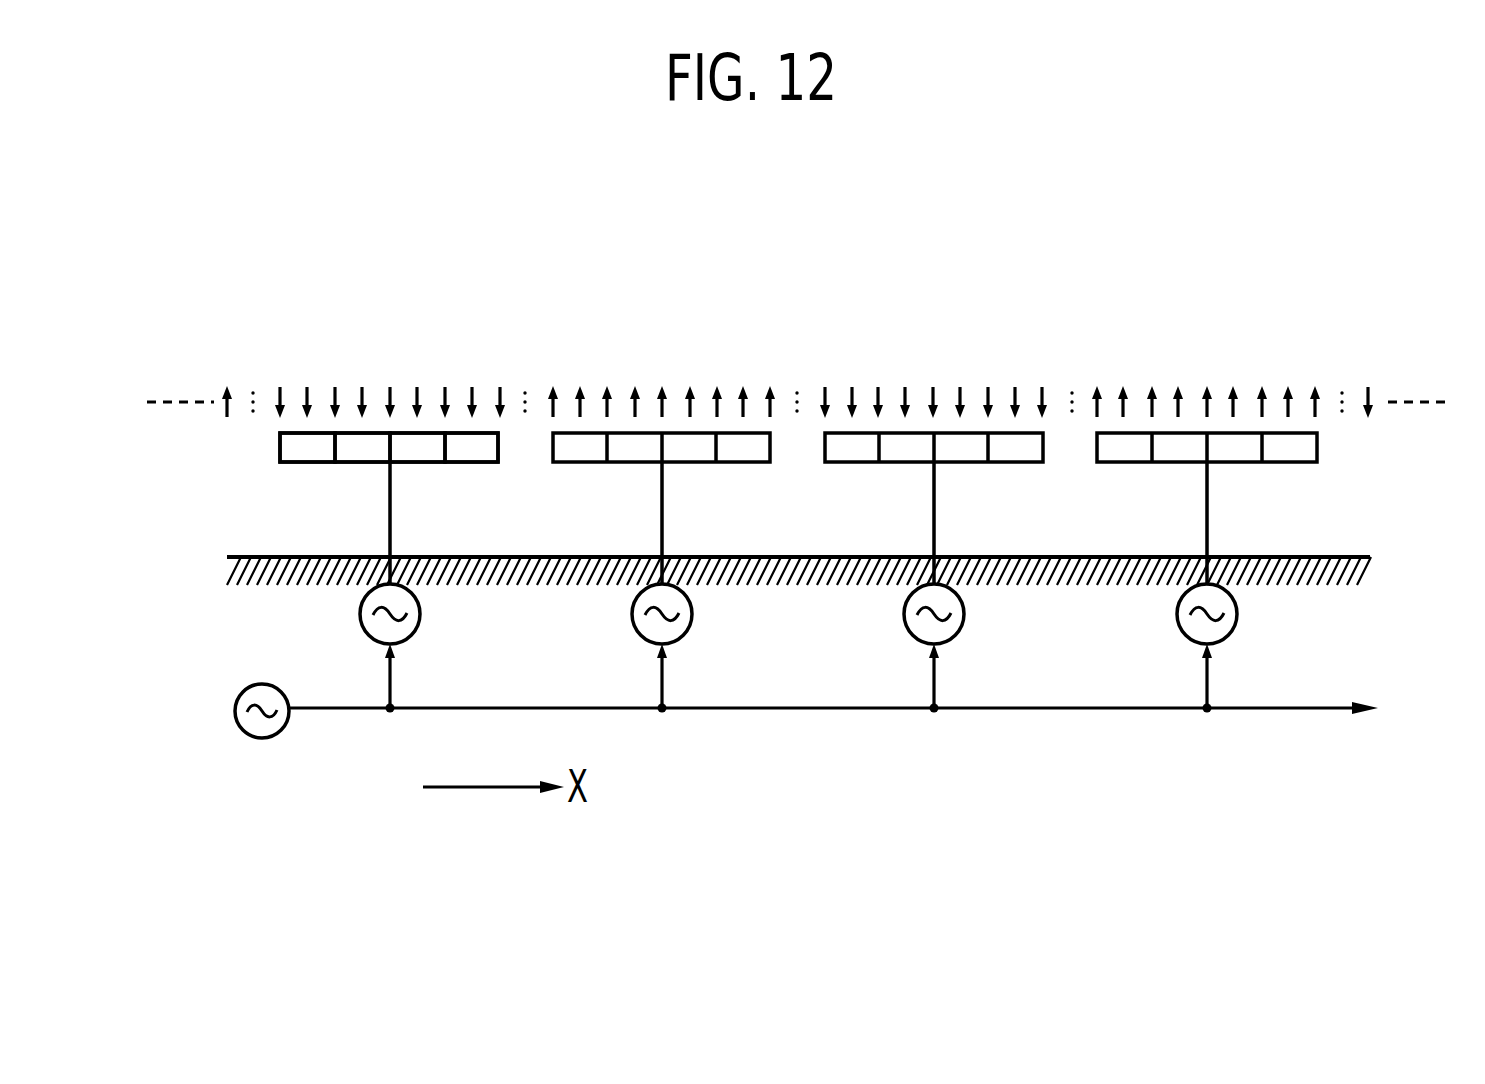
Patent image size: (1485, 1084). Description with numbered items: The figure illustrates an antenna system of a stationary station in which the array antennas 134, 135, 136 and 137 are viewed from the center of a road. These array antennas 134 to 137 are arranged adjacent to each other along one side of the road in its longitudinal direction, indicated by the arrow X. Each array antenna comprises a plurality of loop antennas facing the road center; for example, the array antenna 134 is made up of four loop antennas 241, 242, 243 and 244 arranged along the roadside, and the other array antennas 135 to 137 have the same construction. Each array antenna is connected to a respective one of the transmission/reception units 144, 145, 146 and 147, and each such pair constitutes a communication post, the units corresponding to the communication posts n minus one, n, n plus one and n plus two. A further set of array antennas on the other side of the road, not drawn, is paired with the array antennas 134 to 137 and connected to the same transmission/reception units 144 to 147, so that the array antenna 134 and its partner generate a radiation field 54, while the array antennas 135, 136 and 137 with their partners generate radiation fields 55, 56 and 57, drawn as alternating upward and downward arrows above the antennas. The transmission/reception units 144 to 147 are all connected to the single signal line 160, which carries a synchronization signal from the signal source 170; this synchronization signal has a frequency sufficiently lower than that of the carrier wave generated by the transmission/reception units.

The radiation field 54 is at (447, 395).
The radiation field 55 is at (716, 397).
The radiation field 56 is at (988, 397).
The radiation field 57 is at (1262, 395).
The array antenna 134 is at (391, 436).
The array antenna 135 is at (728, 433).
The array antenna 136 is at (1003, 433).
The array antenna 137 is at (1275, 433).
The loop antenna 241 is at (310, 462).
The loop antenna 242 is at (360, 462).
The loop antenna 243 is at (418, 462).
The loop antenna 244 is at (470, 462).
The transmission/reception unit 144 is at (421, 628).
The transmission/reception unit 145 is at (692, 630).
The transmission/reception unit 146 is at (964, 630).
The transmission/reception unit 147 is at (1237, 628).
The signal line 160 is at (825, 709).
The signal source 170 is at (267, 684).